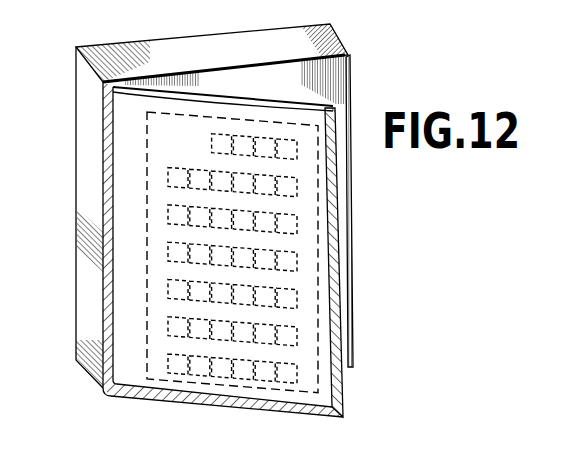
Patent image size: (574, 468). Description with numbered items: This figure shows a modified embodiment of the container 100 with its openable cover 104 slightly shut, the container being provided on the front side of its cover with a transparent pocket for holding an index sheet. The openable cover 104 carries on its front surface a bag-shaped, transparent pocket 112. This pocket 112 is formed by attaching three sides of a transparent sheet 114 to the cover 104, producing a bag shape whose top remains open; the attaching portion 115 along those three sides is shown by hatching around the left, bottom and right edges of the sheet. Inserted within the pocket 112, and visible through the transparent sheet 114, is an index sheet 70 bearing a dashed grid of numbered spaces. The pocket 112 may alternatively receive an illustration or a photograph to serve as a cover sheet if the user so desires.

The album / box assembly 100 is at (236, 234).
The openable cover 104 is at (225, 90).
The transparent pocket 112 is at (162, 99).
The index sheet 70 is at (162, 215).
The transparent sheet 114 is at (132, 355).
The attaching portion 115 is at (317, 413).